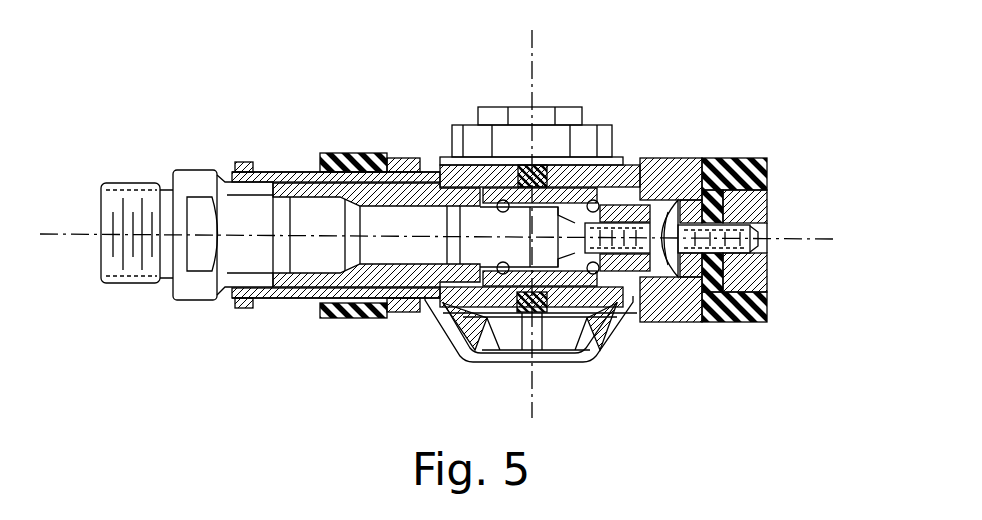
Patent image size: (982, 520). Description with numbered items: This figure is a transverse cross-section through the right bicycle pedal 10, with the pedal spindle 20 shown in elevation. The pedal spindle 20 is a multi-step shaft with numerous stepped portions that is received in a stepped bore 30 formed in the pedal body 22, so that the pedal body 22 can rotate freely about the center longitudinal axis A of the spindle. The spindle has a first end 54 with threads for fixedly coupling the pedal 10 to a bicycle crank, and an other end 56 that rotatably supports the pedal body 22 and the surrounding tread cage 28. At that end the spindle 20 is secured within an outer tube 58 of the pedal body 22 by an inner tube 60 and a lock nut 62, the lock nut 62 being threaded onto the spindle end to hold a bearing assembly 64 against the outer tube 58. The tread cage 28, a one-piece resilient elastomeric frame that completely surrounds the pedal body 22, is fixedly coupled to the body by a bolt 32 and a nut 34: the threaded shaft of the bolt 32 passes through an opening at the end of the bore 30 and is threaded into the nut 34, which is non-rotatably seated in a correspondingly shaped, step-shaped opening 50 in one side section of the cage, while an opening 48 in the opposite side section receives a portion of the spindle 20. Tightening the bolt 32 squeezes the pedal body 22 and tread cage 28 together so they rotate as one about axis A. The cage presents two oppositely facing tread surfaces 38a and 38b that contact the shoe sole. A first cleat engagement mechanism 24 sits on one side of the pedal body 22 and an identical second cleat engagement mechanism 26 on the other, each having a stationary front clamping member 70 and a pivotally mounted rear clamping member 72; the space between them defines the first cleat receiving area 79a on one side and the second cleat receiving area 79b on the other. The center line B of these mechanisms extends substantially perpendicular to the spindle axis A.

The bicycle pedal 10 is at (383, 93).
The pedal spindle 20 is at (193, 167).
The pedal body 22 is at (659, 156).
The first cleat engagement mechanism 24 is at (608, 122).
The second cleat engagement mechanism 26 is at (443, 350).
The tread cage 28 is at (748, 153).
The stepped bore 30 is at (652, 285).
The bolt 32 is at (690, 300).
The nut 34 is at (770, 280).
The first tread surface 38a is at (330, 155).
The second tread surface 38b is at (328, 318).
The opening 48 is at (310, 296).
The opening 50 is at (770, 205).
The first end 54 is at (128, 178).
The other end 56 is at (543, 313).
The outer tube 58 is at (445, 155).
The inner tube 60 is at (397, 157).
The lock nut 62 is at (676, 205).
The bearing assembly 64 is at (556, 188).
The front clamping member 70 is at (487, 110).
The rear clamping member 72 is at (570, 352).
The first cleat receiving area 79a is at (523, 150).
The second cleat receiving area 79b is at (519, 330).
The center longitudinal axis A is at (787, 240).
The longitudinal center line B is at (532, 28).